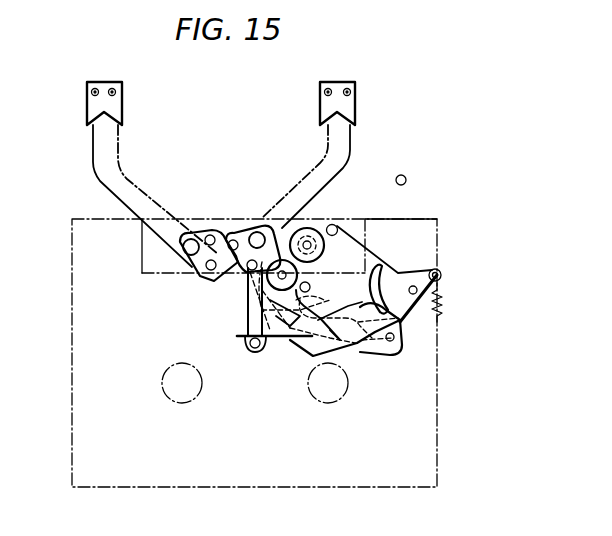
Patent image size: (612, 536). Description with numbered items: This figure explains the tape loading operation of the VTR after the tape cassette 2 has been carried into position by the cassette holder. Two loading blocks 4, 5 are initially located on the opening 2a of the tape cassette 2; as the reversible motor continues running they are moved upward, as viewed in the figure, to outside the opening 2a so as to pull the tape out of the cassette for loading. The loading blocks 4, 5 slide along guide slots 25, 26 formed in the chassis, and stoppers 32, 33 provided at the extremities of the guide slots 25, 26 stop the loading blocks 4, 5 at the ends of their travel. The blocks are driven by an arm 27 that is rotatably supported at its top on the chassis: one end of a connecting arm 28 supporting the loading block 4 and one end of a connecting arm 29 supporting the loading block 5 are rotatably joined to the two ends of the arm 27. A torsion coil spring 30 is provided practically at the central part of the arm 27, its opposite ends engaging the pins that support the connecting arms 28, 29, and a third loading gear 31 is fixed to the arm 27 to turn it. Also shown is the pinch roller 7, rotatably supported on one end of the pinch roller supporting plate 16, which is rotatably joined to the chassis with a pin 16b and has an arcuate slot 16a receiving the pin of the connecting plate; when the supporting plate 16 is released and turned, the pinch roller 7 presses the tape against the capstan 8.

The tape cassette 2 is at (440, 436).
The opening 2a is at (378, 216).
The loading block 4 is at (203, 230).
The loading block 5 is at (248, 232).
The pinch roller 7 is at (316, 228).
The capstan 8 is at (406, 176).
The pinch roller supporting plate 16 is at (396, 276).
The arcuate slot 16a is at (420, 336).
The pin 16b is at (440, 292).
The guide slot 25 is at (98, 176).
The guide slot 26 is at (310, 184).
The arm 27 is at (350, 346).
The connecting arm 28 is at (232, 283).
The connecting arm 29 is at (247, 312).
The torsion coil spring 30 is at (266, 340).
The third loading gear 31 is at (275, 240).
The stopper 32 is at (122, 112).
The stopper 33 is at (355, 112).